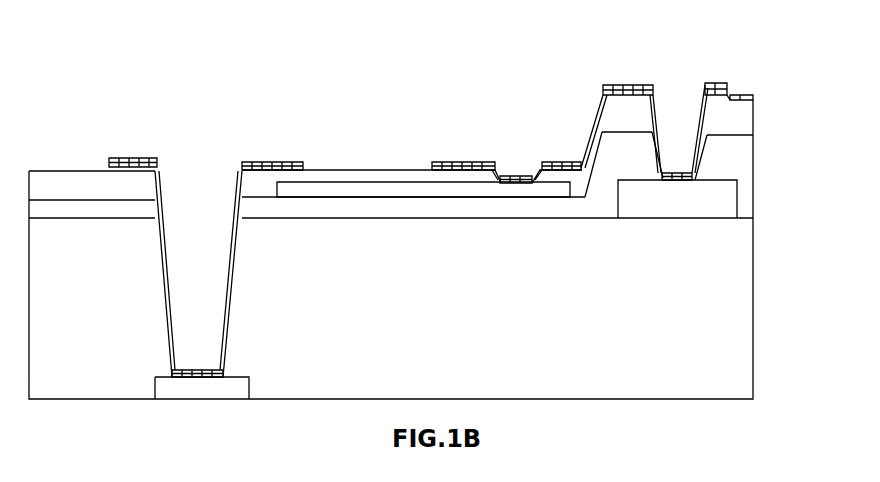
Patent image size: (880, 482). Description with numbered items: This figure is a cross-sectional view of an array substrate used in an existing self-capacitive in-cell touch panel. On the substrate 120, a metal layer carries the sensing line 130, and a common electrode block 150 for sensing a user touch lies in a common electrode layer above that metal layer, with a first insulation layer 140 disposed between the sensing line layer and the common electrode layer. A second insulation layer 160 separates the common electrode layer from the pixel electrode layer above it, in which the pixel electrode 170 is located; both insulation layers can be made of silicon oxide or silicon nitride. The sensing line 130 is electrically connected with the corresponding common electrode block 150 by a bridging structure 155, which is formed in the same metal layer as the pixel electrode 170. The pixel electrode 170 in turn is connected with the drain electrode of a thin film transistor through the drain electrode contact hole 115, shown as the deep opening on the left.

The drain electrode contact hole 115 is at (185, 262).
The substrate 120 is at (697, 355).
The sensing line 130 is at (705, 203).
The first insulation layer 140 is at (738, 172).
The common electrode block 150 is at (380, 197).
The bridging structure 155 is at (602, 88).
The second insulation layer 160 is at (737, 132).
The pixel electrode 170 is at (272, 167).